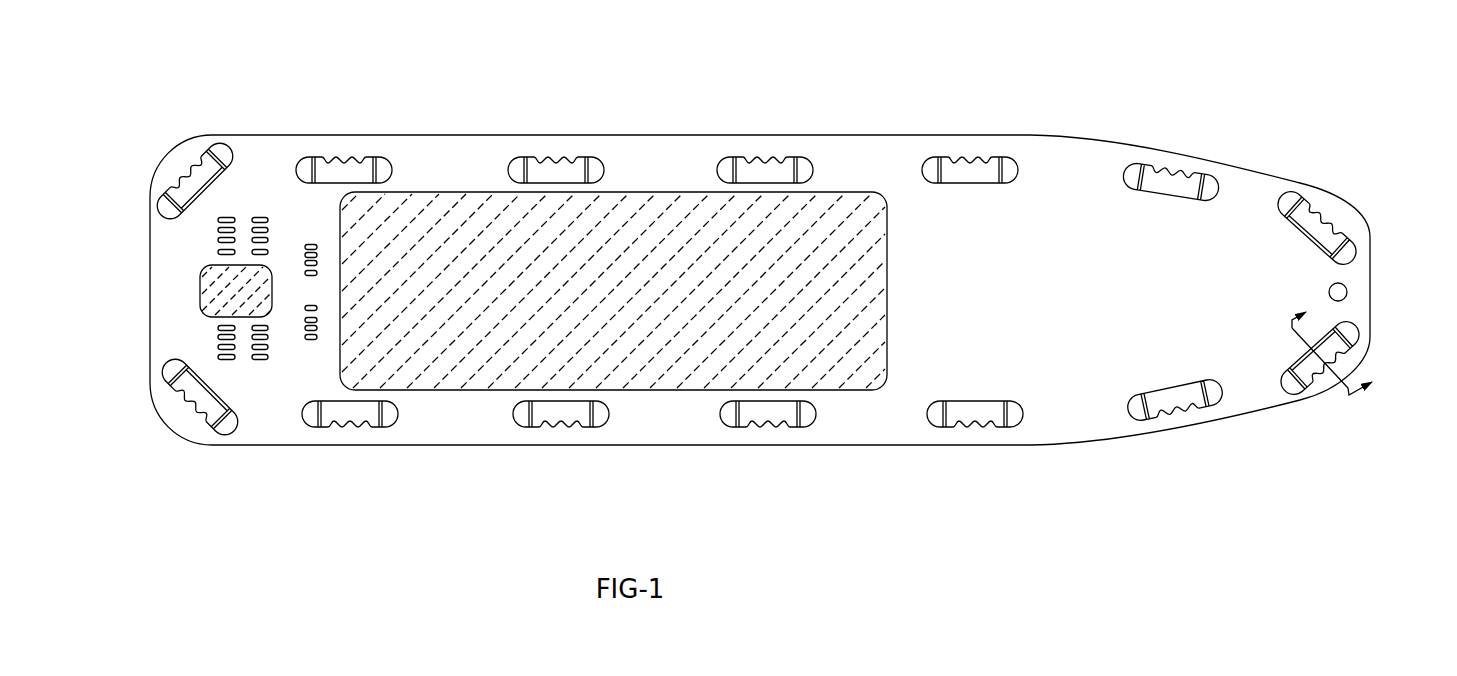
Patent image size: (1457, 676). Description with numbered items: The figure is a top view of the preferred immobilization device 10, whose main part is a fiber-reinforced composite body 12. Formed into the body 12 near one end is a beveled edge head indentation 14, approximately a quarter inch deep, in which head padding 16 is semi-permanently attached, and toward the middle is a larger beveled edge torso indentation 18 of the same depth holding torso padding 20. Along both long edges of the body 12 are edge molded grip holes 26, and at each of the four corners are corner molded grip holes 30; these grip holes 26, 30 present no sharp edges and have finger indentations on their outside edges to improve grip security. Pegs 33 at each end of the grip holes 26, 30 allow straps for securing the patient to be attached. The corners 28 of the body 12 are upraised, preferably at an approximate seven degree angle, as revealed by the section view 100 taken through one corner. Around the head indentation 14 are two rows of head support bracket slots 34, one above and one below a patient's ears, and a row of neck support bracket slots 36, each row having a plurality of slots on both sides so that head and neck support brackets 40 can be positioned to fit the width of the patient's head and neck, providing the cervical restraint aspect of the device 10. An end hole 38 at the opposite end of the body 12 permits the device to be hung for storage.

The immobilization device 10 is at (1053, 110).
The fiber-reinforced composite body 12 is at (1080, 420).
The beveled edge head indentation 14 is at (223, 303).
The head padding 16 is at (215, 288).
The beveled edge torso indentation 18 is at (500, 365).
The torso padding 20 is at (677, 360).
The edge molded grip holes 26 is at (773, 168).
The upraised corners 28 is at (180, 450).
The corner molded grip holes 30 is at (203, 170).
The pegs 33 is at (1000, 165).
The head support bracket slots 34 is at (265, 362).
The neck support bracket slots 36 is at (310, 342).
The end hole 38 is at (1347, 297).
The head and neck support brackets 40 is at (320, 233).
The section view 100 is at (1349, 395).